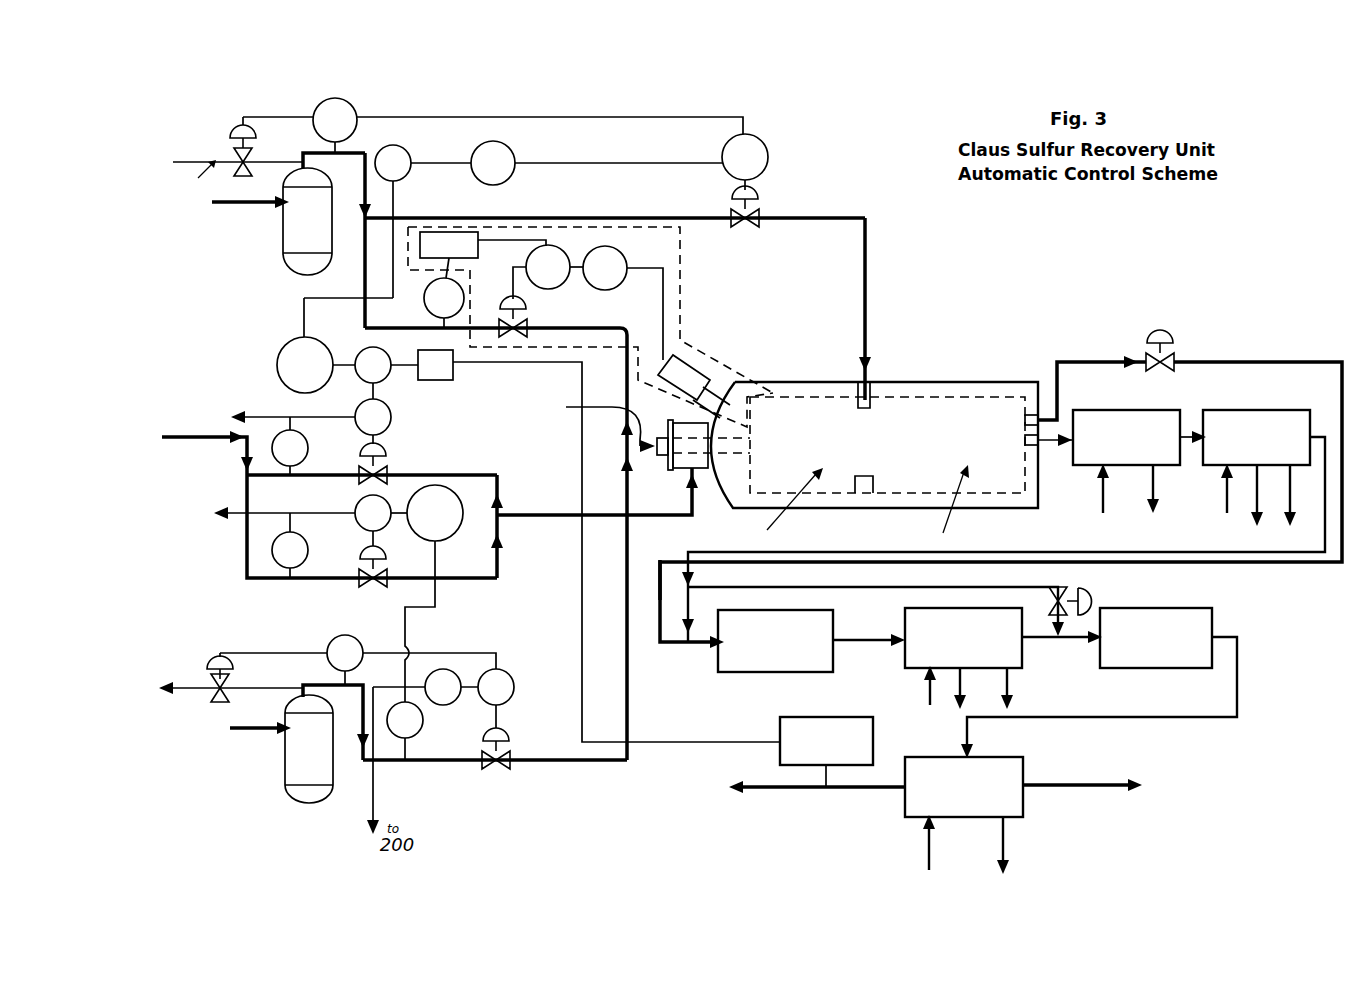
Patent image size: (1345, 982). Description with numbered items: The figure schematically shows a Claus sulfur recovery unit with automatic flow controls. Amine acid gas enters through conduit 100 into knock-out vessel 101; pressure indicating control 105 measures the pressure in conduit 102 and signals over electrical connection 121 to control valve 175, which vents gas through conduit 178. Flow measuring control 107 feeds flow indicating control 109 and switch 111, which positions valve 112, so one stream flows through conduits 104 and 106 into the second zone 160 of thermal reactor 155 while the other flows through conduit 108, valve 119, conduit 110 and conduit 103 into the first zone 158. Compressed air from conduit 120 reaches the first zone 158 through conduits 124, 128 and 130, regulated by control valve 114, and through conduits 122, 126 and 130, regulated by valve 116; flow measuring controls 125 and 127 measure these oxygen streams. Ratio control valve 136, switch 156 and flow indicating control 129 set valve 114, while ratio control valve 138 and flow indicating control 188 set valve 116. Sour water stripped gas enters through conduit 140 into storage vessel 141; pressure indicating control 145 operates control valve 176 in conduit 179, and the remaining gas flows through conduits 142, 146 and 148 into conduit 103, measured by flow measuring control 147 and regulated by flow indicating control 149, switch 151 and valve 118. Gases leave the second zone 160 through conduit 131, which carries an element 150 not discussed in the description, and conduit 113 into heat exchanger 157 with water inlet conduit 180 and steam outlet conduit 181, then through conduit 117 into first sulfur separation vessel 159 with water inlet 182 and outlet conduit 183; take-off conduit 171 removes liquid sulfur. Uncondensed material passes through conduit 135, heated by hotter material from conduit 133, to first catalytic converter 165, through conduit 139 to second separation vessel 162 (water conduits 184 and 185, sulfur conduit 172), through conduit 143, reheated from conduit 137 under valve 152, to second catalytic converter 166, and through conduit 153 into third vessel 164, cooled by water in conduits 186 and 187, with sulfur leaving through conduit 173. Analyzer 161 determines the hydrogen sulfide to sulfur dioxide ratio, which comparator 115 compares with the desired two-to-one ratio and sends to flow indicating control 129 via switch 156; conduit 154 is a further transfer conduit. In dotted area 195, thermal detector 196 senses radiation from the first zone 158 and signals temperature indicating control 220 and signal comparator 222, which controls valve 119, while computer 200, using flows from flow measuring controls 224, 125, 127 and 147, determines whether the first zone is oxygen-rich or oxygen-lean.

The conduit 100 is at (238, 206).
The knock-out vessel 101 is at (296, 236).
The conduit 102 is at (350, 155).
The conduit 103 is at (589, 427).
The conduit 104 is at (612, 217).
The pressure indicating control 105 is at (357, 112).
The conduit 106 is at (866, 280).
The flow measuring control 107 is at (408, 174).
The conduit 108 is at (363, 281).
The flow indicating control 109 is at (517, 149).
The conduit 110 is at (612, 326).
The switch 111 is at (762, 140).
The valve 112 is at (757, 191).
The conduit 113 is at (1062, 447).
The control valve 114 is at (388, 449).
The comparator 115 is at (429, 351).
The valve 116 is at (360, 552).
The conduit 117 is at (1190, 428).
The valve 118 is at (510, 735).
The valve 119 is at (528, 306).
The conduit 120 is at (194, 432).
The electrical connection 121 is at (288, 118).
The conduit 122 is at (337, 582).
The conduit 124 is at (330, 470).
The flow measuring control 125 is at (278, 535).
The conduit 126 is at (478, 580).
The flow measuring control 127 is at (280, 431).
The conduit 128 is at (428, 474).
The flow indicating control 129 is at (392, 406).
The conduit 130 is at (572, 521).
The conduit 131 is at (1078, 358).
The conduit 133 is at (1313, 358).
The conduit 135 is at (660, 572).
The ratio control valve 136 is at (285, 348).
The conduit 137 is at (900, 590).
The ratio control valve 138 is at (457, 480).
The conduit 139 is at (870, 643).
The conduit 140 is at (258, 735).
The storage vessel 141 is at (298, 762).
The conduit 142 is at (322, 683).
The conduit 143 is at (1042, 642).
The pressure indicating control 145 is at (345, 636).
The conduit 146 is at (447, 763).
The flow measuring control 147 is at (423, 725).
The conduit 148 is at (550, 765).
The flow indicating control 149 is at (449, 669).
The control valve 150 is at (1168, 330).
The switch 151 is at (511, 669).
The valve 152 is at (1093, 590).
The conduit 153 is at (1158, 718).
The conduit 154 is at (878, 790).
The thermal reactor 155 is at (865, 453).
The switch 156 is at (362, 348).
The heat exchanger 157 is at (1108, 450).
The first zone 158 is at (773, 508).
The first sulfur separation vessel 159 is at (1238, 450).
The second zone 160 is at (937, 511).
The analyzer 161 is at (808, 753).
The second sulfur separation vessel 162 is at (944, 650).
The third sulfur separation vessel 164 is at (945, 799).
The first catalytic converter 165 is at (756, 653).
The second catalytic converter 166 is at (1137, 650).
The take-off conduit 171 is at (1323, 553).
The conduit 172 is at (1020, 676).
The conduit 173 is at (1008, 842).
The control valve 175 is at (230, 136).
The control valve 176 is at (232, 663).
The conduit 178 is at (231, 178).
The conduit 179 is at (258, 690).
The inlet conduit 180 is at (1100, 497).
The outlet conduit 181 is at (1152, 485).
The inlet 182 is at (1222, 492).
The outlet conduit 183 is at (1262, 495).
The conduit 184 is at (927, 699).
The conduit 185 is at (953, 680).
The conduit 186 is at (928, 848).
The conduit 187 is at (1053, 783).
The flow indicating control 188 is at (362, 503).
The dotted area 195 is at (700, 290).
The thermal detector 196 is at (712, 357).
The computer 200 is at (436, 256).
The temperature indicating control 220 is at (620, 254).
The signal comparator 222 is at (538, 253).
The flow measuring control 224 is at (426, 290).